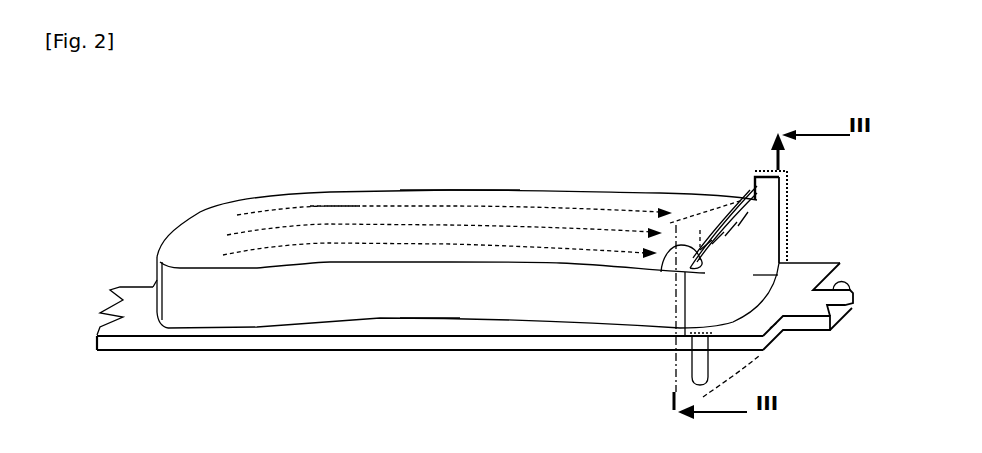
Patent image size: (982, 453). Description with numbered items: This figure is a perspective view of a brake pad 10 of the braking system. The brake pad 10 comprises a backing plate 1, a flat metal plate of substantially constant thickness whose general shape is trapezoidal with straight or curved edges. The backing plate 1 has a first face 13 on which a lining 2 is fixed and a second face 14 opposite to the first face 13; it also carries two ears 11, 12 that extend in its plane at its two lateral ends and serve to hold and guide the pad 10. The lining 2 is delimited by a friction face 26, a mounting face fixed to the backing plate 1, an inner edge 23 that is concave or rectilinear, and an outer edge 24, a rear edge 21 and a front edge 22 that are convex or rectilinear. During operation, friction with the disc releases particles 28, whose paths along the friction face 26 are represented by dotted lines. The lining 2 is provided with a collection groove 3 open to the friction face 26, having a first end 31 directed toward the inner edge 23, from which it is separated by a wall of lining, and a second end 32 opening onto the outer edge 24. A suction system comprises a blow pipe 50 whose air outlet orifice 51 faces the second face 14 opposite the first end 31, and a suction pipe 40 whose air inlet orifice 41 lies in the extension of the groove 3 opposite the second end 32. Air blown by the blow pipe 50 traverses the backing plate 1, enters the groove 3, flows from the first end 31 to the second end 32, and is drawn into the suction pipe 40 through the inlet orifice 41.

The backing plate 1 is at (223, 343).
The lining 2 is at (568, 193).
The collection groove 3 is at (747, 193).
The brake pad 10 is at (194, 169).
The ear 11 is at (847, 287).
The ear 12 is at (120, 287).
The first face 13 is at (430, 312).
The second face 14 is at (553, 353).
The rear edge 21 is at (783, 267).
The front edge 22 is at (153, 287).
The inner edge 23 is at (398, 296).
The outer edge 24 is at (507, 191).
The friction face 26 is at (455, 212).
The particles 28 is at (363, 222).
The first end 31 is at (672, 256).
The second end 32 is at (783, 197).
The suction pipe 40 is at (787, 183).
The air inlet orifice 41 is at (750, 195).
The blow pipe 50 is at (688, 366).
The air outlet orifice 51 is at (775, 330).